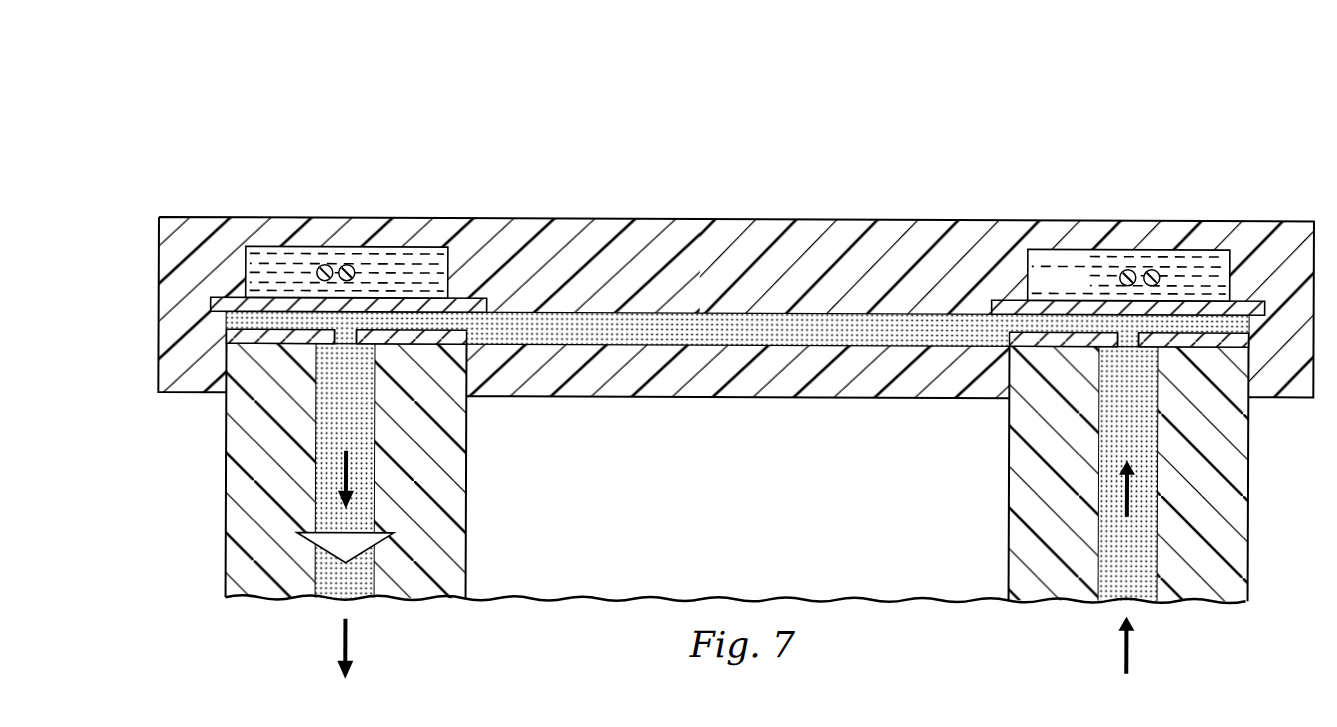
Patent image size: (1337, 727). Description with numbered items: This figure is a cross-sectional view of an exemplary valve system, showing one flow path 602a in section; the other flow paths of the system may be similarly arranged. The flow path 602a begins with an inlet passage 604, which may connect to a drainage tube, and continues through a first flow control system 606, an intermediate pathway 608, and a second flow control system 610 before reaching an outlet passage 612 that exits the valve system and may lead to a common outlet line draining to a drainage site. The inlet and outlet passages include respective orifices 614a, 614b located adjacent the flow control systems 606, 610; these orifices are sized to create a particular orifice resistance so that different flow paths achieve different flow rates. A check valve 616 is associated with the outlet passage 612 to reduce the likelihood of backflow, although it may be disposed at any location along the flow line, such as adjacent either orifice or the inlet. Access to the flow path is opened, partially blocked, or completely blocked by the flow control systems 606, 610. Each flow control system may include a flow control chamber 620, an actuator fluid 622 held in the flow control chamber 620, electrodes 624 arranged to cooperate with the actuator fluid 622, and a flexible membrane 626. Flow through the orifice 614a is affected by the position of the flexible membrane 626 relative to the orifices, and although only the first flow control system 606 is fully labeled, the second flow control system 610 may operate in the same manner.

The flow path 602a is at (608, 113).
The inlet passage 604 is at (1145, 585).
The first flow control system 606 is at (1086, 232).
The intermediate pathway 608 is at (787, 330).
The second flow control system 610 is at (375, 198).
The outlet passage 612 is at (333, 585).
The orifice 614a is at (1128, 343).
The orifice 614b is at (347, 337).
The check valve 616 is at (313, 547).
The flow control chamber 620 is at (1187, 268).
The actuator fluid 622 is at (1041, 284).
The electrodes 624 is at (1152, 265).
The flexible membrane 626 is at (990, 299).